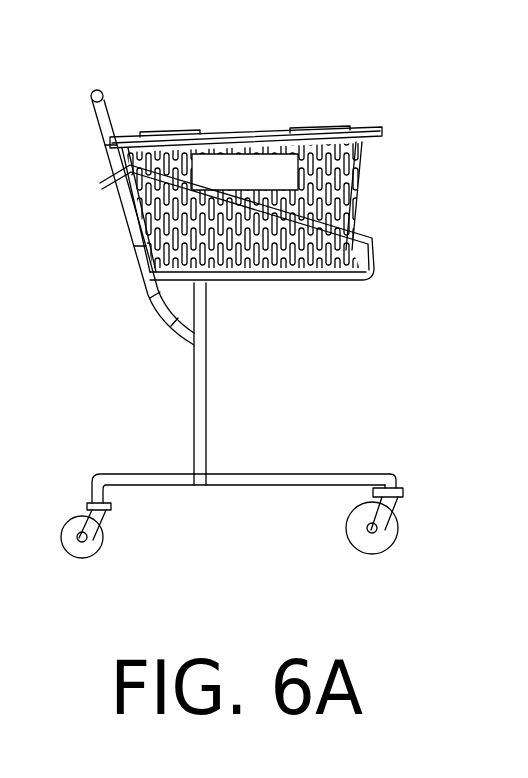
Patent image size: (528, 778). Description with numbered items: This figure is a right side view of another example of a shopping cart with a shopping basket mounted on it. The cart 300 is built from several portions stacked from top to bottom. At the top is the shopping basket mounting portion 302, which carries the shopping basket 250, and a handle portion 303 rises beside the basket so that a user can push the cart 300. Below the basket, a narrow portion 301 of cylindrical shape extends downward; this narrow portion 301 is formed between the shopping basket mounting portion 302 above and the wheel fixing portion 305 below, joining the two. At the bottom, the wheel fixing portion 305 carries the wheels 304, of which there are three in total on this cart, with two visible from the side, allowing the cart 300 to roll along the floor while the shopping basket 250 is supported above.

The cart 300 is at (395, 221).
The handle portion 303 is at (103, 91).
The shopping basket 250 is at (341, 122).
The shopping basket mounting portion 302 is at (240, 284).
The narrow portion 301 is at (200, 343).
The wheel fixing portion 305 is at (262, 472).
The wheels 304 is at (97, 553).